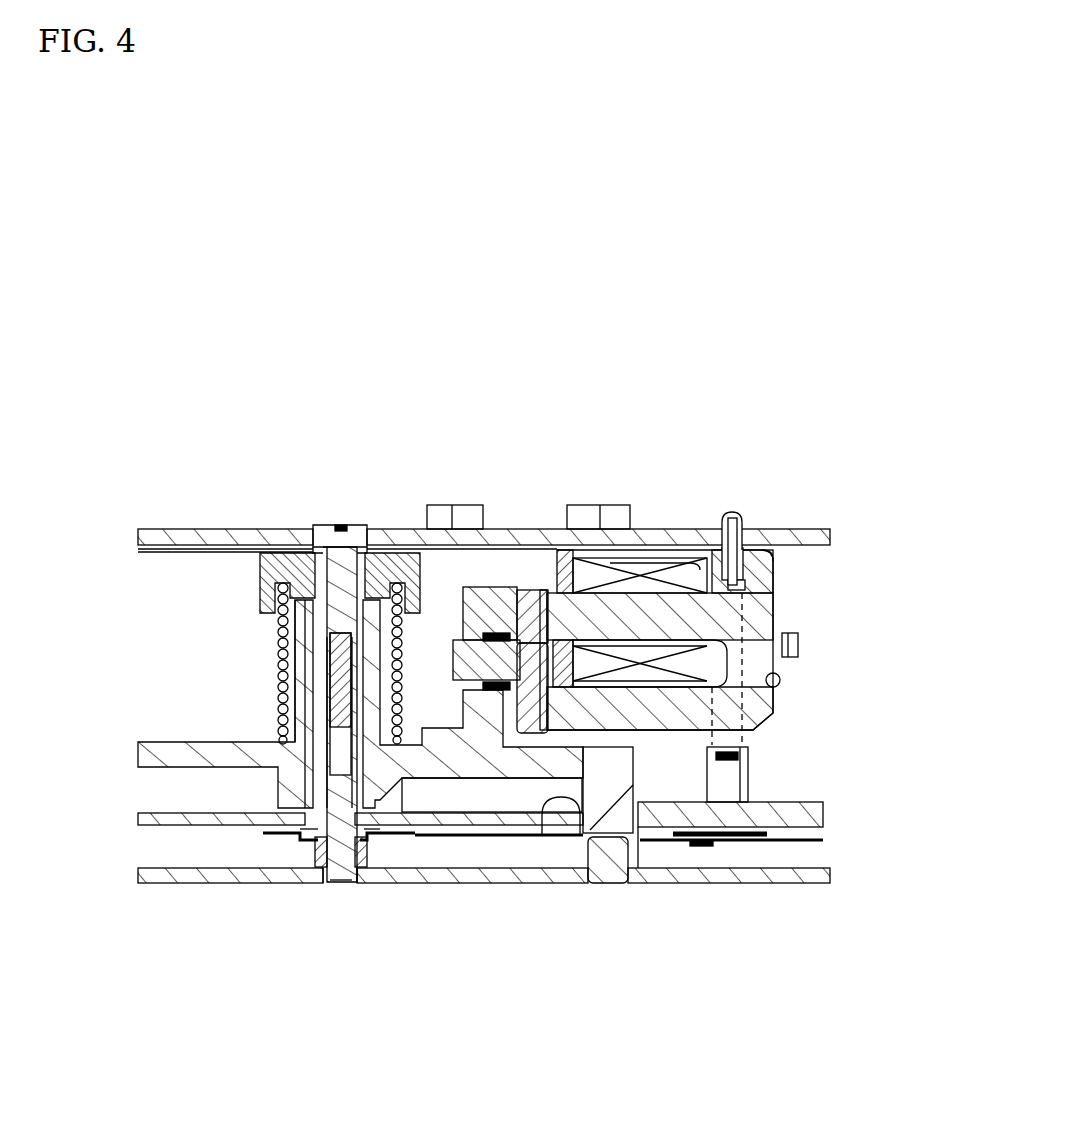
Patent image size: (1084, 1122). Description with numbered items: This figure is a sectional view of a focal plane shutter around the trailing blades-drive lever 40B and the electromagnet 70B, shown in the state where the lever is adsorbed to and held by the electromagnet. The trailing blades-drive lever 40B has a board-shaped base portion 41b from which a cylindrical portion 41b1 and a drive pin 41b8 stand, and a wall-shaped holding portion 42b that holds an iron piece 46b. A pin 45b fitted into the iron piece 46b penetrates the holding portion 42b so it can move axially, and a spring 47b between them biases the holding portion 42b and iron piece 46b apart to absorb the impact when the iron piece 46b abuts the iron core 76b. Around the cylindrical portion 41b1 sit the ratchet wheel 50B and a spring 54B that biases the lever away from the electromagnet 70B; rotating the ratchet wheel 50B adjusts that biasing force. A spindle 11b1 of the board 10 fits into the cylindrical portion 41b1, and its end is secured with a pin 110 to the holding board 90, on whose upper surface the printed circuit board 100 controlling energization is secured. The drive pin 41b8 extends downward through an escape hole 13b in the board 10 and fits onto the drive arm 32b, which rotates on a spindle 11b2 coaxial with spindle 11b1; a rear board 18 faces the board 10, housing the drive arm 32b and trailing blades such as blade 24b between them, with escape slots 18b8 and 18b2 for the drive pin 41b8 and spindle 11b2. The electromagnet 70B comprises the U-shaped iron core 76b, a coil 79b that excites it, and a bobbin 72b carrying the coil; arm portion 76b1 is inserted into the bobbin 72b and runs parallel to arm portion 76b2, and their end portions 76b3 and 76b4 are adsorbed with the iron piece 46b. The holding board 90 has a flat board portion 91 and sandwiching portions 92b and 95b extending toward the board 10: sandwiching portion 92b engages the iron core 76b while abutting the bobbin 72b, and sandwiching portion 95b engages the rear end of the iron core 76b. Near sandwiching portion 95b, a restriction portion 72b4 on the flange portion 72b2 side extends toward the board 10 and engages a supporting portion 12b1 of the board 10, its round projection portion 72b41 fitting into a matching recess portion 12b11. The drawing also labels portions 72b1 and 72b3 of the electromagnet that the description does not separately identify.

The holding board 90 is at (168, 528).
The printed circuit board 100 is at (207, 528).
The flat board portion 91 is at (262, 528).
The pin 110 is at (340, 525).
The spindle 11b1 is at (376, 528).
The ratchet wheel 50B is at (255, 572).
The spring 54B is at (276, 628).
The base portion 41b is at (480, 884).
The cylindrical portion 41b1 is at (276, 668).
The iron piece 46b is at (523, 598).
The spring 47b is at (467, 622).
The pin 45b is at (453, 660).
The holding portion 42b is at (470, 526).
The bobbin 72b is at (782, 528).
The case upper portion 72b1 is at (566, 528).
The flange portion 72b2 is at (713, 550).
The pin 72b3 is at (740, 520).
The restriction portion 72b4 is at (748, 738).
The projection portion 72b41 is at (745, 754).
The end portion 76b3 is at (586, 552).
The coil 79b is at (678, 556).
The arm portion 76b1 is at (640, 600).
The iron core 76b is at (785, 607).
The arm portion 76b2 is at (662, 715).
The end portion 76b4 is at (742, 884).
The sandwiching portion 92b is at (553, 548).
The sandwiching portion 95b is at (778, 557).
The electromagnet 70B is at (810, 641).
The recess portion 12b11 is at (750, 782).
The supporting portion 12b1 is at (750, 792).
The trailing blades-drive lever 40B is at (493, 790).
The escape hole 13b is at (565, 805).
The board 10 is at (205, 826).
The rear board 18 is at (173, 890).
The escape slot 18b2 is at (333, 884).
The escape slot 18b8 is at (590, 884).
The drive pin 41b8 is at (622, 884).
The drive arm 32b is at (292, 838).
The blade 24b is at (825, 846).
The spindle 11b2 is at (358, 884).